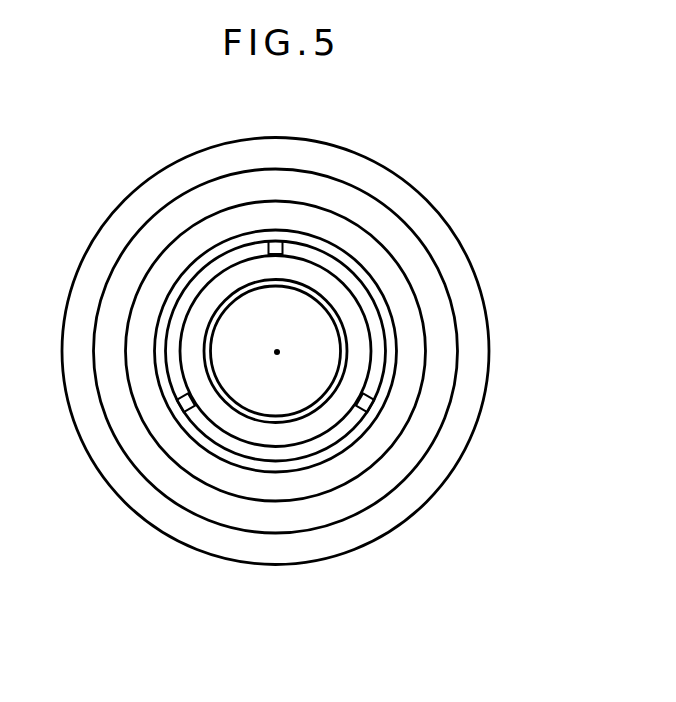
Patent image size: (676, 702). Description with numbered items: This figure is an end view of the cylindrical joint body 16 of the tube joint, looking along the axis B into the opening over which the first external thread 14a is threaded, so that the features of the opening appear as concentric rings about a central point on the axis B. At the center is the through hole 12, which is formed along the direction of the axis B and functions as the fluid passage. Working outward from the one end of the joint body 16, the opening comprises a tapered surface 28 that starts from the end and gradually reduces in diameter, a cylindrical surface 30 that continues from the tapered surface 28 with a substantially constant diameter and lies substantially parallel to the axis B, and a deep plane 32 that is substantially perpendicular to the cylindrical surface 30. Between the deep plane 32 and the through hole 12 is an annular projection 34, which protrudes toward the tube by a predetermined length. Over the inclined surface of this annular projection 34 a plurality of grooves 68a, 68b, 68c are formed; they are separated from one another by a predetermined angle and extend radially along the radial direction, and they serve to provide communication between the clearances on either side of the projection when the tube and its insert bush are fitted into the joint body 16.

The through hole 12 is at (315, 367).
The first external thread 14a is at (325, 165).
The joint body 16 is at (171, 538).
The tapered surface 28 is at (348, 247).
The cylindrical surface 30 is at (373, 278).
The deep plane 32 is at (383, 313).
The annular projection 34 is at (373, 339).
The groove 68a is at (284, 243).
The groove 68b is at (180, 403).
The groove 68c is at (372, 406).
The axis B is at (280, 346).